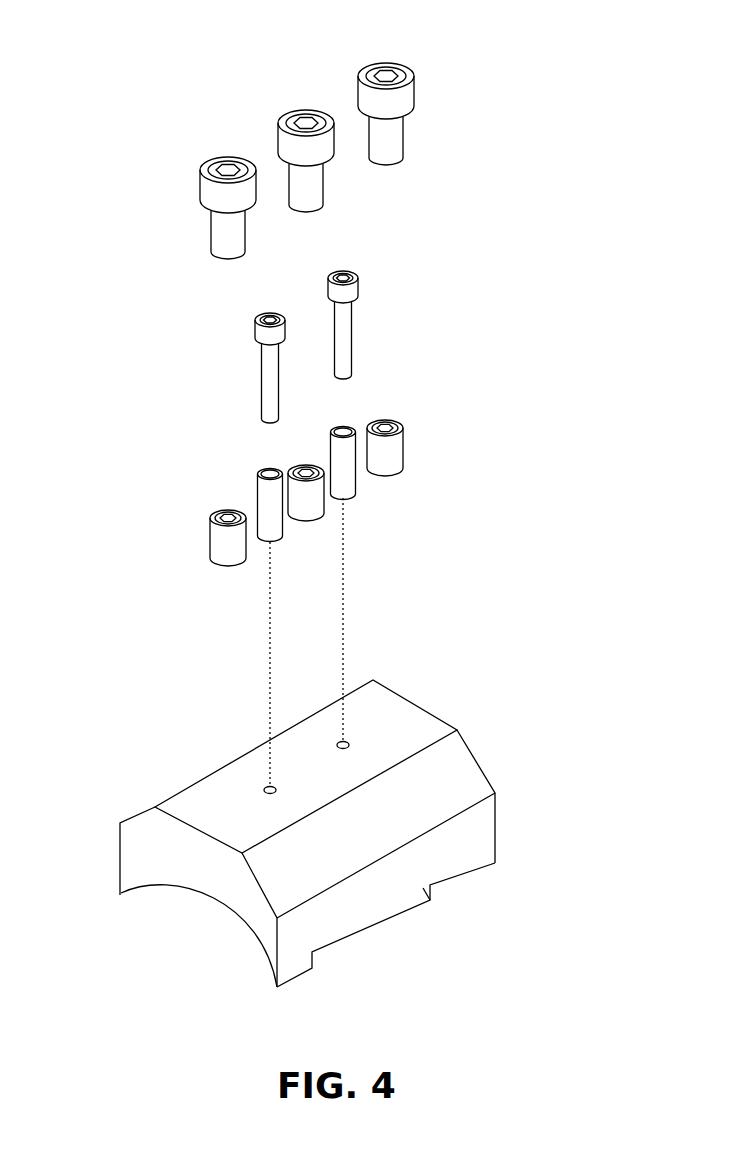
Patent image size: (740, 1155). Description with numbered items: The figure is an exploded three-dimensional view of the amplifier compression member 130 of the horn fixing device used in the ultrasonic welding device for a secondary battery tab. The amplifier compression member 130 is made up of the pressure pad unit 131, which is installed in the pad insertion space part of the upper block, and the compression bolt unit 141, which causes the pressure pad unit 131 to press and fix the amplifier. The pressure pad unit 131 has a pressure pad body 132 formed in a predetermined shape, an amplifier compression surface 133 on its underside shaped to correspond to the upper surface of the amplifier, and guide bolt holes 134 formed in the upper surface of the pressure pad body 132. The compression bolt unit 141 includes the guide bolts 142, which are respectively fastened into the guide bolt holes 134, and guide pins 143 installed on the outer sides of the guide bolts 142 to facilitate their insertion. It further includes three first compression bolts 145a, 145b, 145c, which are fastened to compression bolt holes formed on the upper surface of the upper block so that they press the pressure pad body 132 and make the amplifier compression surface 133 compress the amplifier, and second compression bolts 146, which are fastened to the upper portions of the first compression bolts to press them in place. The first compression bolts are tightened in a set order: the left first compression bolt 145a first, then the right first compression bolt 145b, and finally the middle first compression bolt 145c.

The amplifier compression member 130 is at (327, 30).
The pressure pad unit 131 is at (496, 740).
The pressure pad body 132 is at (462, 784).
The amplifier compression surface 133 is at (212, 907).
The guide bolt holes 134 is at (346, 741).
The compression bolt unit 141 is at (418, 301).
The guide bolts 142 is at (262, 371).
The guide pins 143 is at (262, 482).
The first compression bolt 145a is at (217, 545).
The first compression bolt 145b is at (402, 455).
The first compression bolt 145c is at (306, 507).
The second compression bolts 146 is at (219, 229).